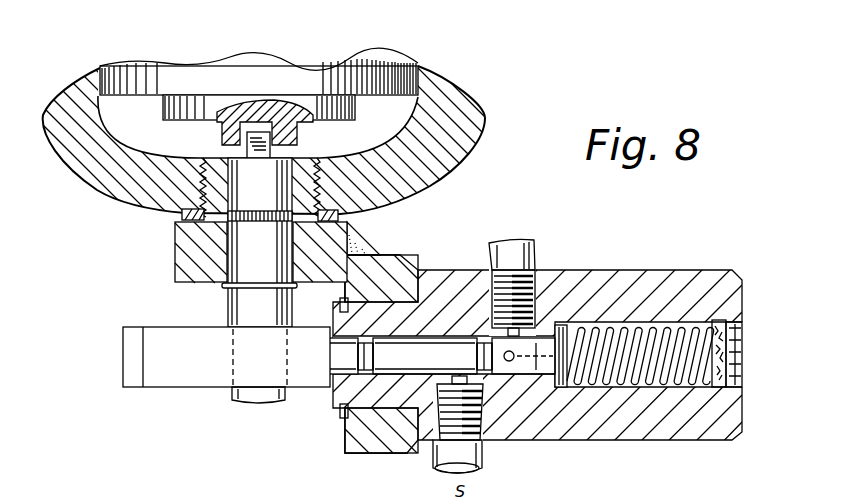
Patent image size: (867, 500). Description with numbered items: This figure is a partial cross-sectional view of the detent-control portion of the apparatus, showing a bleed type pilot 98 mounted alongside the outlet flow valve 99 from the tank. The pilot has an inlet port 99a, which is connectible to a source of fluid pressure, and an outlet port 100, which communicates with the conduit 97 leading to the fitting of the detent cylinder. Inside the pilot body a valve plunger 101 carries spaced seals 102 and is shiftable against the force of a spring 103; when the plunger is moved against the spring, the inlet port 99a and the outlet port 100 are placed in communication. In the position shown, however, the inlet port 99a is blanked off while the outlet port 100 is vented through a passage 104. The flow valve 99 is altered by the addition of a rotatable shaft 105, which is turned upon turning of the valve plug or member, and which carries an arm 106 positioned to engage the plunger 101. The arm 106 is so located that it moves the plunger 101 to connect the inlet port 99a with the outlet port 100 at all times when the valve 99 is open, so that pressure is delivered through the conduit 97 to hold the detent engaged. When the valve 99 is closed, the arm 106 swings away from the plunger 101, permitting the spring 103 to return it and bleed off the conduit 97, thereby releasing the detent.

The conduit 97 is at (540, 252).
The bleed type pilot 98 is at (586, 269).
The outlet flow valve 99 is at (418, 66).
The inlet port 99a is at (482, 384).
The outlet port 100 is at (540, 333).
The valve plunger 101 is at (422, 335).
The spaced seals 102 is at (487, 333).
The spring 103 is at (702, 356).
The passage 104 is at (548, 380).
The rotatable shaft 105 is at (240, 243).
The arm 106 is at (173, 327).